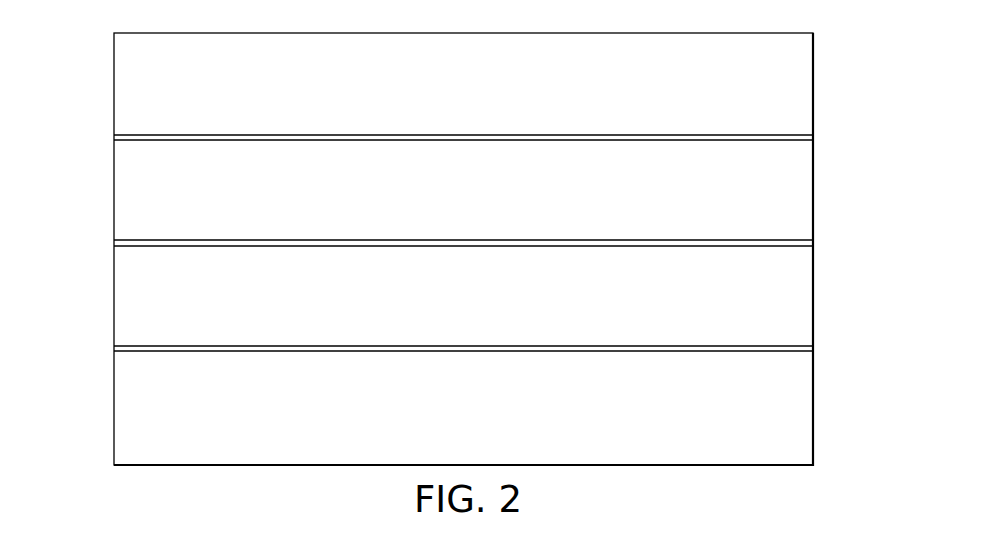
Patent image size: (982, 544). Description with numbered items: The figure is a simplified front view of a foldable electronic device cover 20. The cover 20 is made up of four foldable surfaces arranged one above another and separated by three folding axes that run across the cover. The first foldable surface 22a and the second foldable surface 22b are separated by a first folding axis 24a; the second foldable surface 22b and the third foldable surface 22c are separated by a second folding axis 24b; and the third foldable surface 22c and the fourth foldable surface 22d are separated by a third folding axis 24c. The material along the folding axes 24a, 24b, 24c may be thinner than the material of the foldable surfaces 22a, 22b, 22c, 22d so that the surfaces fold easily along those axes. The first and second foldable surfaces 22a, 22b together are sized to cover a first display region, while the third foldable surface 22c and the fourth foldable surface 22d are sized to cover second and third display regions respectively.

The foldable electronic device cover 20 is at (263, 466).
The first foldable surface 22a is at (119, 81).
The second foldable surface 22b is at (119, 186).
The third foldable surface 22c is at (119, 308).
The fourth foldable surface 22d is at (119, 412).
The first folding axis 24a is at (813, 139).
The second folding axis 24b is at (813, 244).
The third folding axis 24c is at (813, 350).